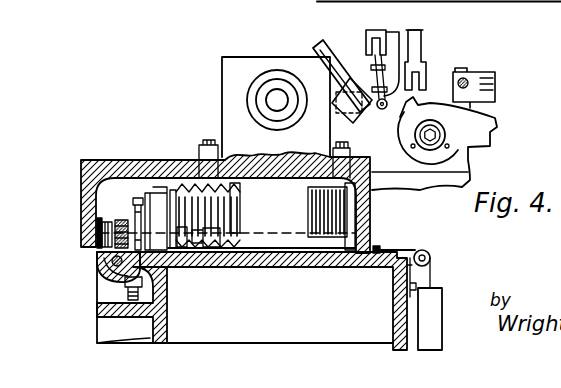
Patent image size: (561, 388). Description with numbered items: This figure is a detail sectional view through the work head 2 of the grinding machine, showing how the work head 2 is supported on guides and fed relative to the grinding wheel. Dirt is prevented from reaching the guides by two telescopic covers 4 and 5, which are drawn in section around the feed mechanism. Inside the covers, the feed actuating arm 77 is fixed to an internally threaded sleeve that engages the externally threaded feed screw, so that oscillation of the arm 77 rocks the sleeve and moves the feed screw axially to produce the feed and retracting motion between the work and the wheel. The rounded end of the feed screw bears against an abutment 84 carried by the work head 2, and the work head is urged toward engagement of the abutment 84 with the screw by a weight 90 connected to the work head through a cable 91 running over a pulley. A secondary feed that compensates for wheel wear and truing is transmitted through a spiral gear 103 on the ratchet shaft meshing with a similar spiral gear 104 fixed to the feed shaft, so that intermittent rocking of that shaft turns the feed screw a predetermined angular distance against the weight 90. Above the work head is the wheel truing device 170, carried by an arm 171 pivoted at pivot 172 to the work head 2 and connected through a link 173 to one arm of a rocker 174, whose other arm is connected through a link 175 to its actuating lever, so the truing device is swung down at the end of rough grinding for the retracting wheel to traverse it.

The work head 2 is at (243, 62).
The telescopic cover 4 is at (187, 160).
The telescopic cover 5 is at (365, 215).
The feed actuating arm 77 is at (143, 237).
The abutment 84 is at (100, 233).
The weight 90 is at (440, 290).
The cable 91 is at (416, 248).
The spiral gear 103 is at (100, 268).
The spiral gear 104 is at (128, 222).
The wheel truing device 170 is at (316, 42).
The arm 171 is at (330, 62).
The pivot 172 is at (331, 112).
The link 173 is at (381, 110).
The rocker 174 is at (378, 27).
The link 175 is at (421, 79).